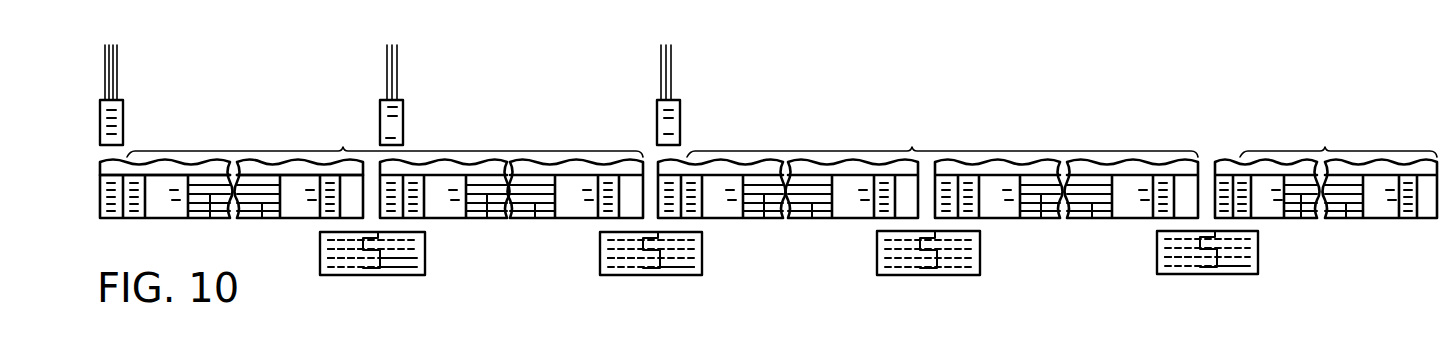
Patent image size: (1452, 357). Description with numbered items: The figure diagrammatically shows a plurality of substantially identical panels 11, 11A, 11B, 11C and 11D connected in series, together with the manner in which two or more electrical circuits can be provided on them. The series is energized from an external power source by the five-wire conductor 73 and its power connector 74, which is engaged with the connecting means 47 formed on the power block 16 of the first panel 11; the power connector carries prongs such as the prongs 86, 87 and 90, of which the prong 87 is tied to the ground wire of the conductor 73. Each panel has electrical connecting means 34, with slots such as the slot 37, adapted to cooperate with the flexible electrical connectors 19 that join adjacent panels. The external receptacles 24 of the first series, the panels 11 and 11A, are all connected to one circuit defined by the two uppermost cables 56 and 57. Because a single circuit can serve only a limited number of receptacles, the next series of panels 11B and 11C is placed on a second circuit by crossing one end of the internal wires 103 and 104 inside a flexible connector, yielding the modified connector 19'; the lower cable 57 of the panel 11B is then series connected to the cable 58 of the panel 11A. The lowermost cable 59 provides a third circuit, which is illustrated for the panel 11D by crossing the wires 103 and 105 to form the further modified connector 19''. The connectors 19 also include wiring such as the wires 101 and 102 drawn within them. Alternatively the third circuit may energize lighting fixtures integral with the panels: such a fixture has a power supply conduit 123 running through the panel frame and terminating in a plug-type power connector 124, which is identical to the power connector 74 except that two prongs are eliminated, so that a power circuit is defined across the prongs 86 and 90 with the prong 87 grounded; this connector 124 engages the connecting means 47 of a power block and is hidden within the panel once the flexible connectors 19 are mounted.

The panel 11 is at (236, 96).
The panel 11A is at (524, 123).
The panel 11B is at (788, 130).
The panel 11C is at (1059, 140).
The panel 11D is at (1311, 138).
The power block 16 is at (156, 168).
The flexible electrical connector 19 is at (650, 278).
The modified connector 19' is at (651, 281).
The modified connector 19'' is at (1207, 278).
The external receptacle 24 is at (170, 197).
The electrical connecting means 34 is at (134, 210).
The slot 37 is at (318, 165).
The connecting means 47 is at (121, 205).
The cable 56 is at (206, 195).
The cable 57 is at (252, 190).
The cable 58 is at (213, 200).
The lowermost cable 59 is at (264, 210).
The conductor 73 is at (120, 66).
The power connector 74 is at (128, 103).
The prong 86 is at (386, 104).
The prong 87 is at (386, 113).
The prong 90 is at (400, 142).
The dashed row 101 is at (335, 240).
The dashed row 102 is at (345, 250).
The internal wire 103 is at (346, 262).
The internal wire 104 is at (398, 268).
The wire 105 is at (410, 268).
The power supply conduit 123 is at (393, 75).
The plug-type power connector 124 is at (407, 123).